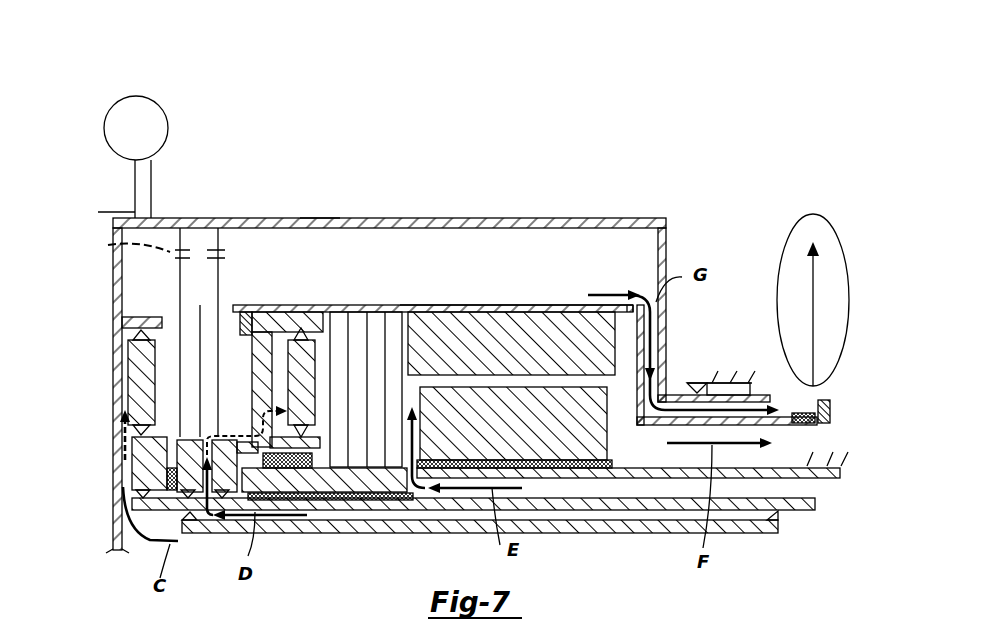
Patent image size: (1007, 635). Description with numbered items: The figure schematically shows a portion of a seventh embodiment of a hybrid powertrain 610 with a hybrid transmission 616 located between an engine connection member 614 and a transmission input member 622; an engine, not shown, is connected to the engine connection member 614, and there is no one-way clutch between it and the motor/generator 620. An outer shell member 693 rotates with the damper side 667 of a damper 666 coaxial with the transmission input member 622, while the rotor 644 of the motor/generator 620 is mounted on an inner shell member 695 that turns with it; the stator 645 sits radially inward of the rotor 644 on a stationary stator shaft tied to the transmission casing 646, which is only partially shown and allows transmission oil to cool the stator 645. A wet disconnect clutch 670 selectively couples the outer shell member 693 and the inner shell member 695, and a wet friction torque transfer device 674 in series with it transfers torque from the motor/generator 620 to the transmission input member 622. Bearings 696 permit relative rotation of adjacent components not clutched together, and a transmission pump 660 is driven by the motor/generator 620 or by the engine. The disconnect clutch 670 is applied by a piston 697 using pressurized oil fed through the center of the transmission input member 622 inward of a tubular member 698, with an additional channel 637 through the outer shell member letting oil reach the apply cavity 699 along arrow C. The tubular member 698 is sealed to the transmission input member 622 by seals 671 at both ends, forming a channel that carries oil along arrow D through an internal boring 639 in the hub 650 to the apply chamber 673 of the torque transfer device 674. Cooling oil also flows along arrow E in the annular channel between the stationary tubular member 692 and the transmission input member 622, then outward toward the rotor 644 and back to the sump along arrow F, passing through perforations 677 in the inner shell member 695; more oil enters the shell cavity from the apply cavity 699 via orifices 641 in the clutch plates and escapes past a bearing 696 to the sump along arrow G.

The hybrid powertrain 610 is at (621, 174).
The engine connection member 614 is at (110, 212).
The hybrid transmission 616 is at (444, 196).
The motor/generator 620 is at (552, 291).
The transmission input member 622 is at (805, 486).
The additional channel 637 is at (130, 455).
The internal boring 639 is at (258, 428).
The orifices 641 is at (147, 246).
The rotor 644 is at (510, 322).
The stator 645 is at (597, 443).
The transmission casing 646 is at (718, 372).
The hub 650 is at (268, 378).
The transmission pump 660 is at (836, 228).
The damper 666 is at (125, 100).
The damper side 667 is at (152, 181).
The disconnect clutch 670 is at (248, 250).
The seals 671 is at (779, 517).
The apply chamber 673 is at (282, 352).
The torque transfer device 674 is at (339, 335).
The perforations 677 is at (378, 312).
The stationary tubular member 692 is at (812, 462).
The outer shell member 693 is at (300, 218).
The inner shell member 695 is at (455, 305).
The bearings 696 is at (170, 476).
The piston 697 is at (130, 360).
The tubular member 698 is at (745, 535).
The apply cavity 699 is at (122, 433).